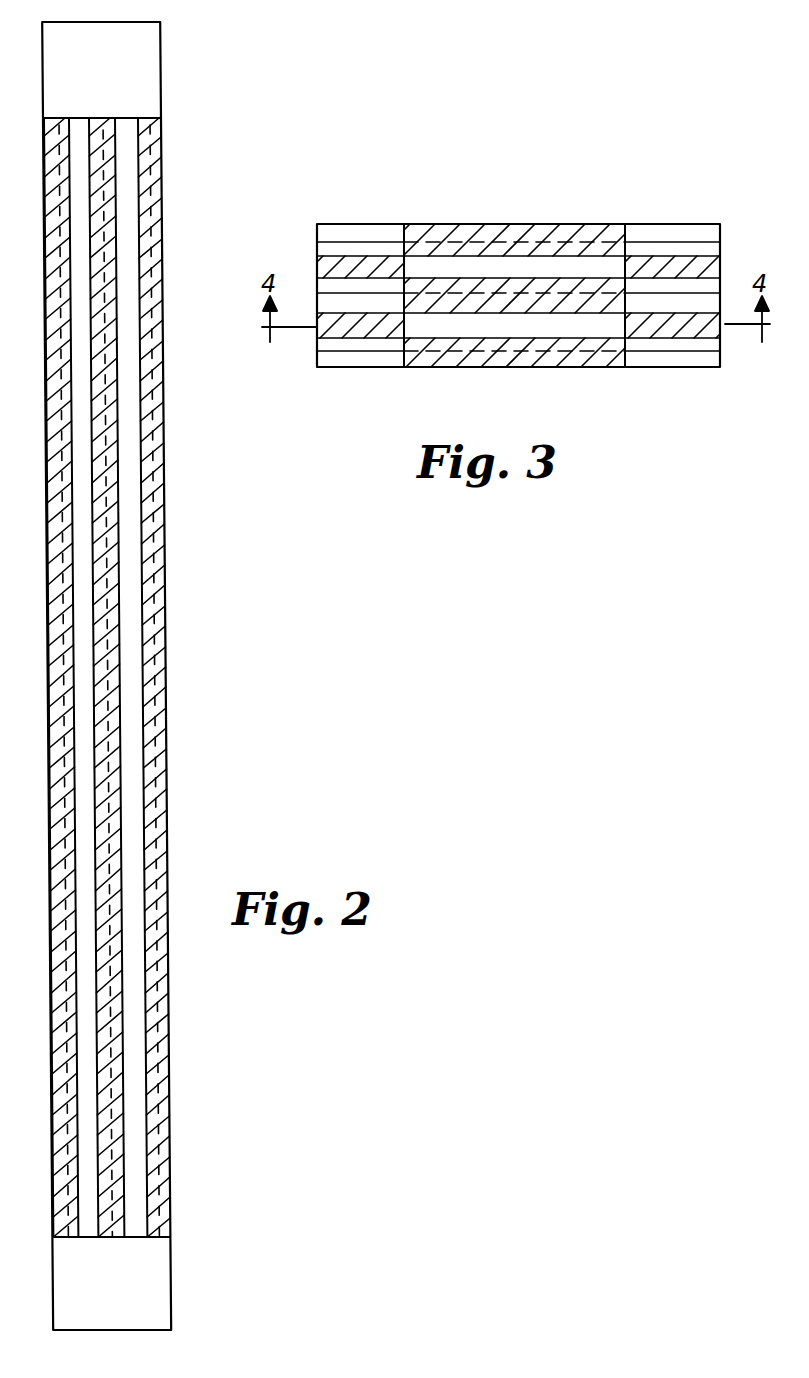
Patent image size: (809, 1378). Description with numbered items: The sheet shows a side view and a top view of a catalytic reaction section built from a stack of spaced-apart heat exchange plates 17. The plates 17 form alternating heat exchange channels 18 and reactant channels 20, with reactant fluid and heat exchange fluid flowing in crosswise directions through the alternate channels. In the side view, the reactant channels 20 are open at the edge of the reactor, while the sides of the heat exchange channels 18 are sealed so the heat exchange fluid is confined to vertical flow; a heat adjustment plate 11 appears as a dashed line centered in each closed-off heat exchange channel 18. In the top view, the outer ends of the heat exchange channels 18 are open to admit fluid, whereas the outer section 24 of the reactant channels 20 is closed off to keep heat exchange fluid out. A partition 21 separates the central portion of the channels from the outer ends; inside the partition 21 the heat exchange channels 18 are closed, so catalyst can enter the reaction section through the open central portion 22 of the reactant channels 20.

In FIG. 2, the heat adjustment plate 11 is at (103, 770).
In FIG. 3, the heat adjustment plate 11 is at (336, 232).
In FIG. 2, the heat exchange plate 17 is at (147, 642).
In FIG. 3, the heat exchange plate 17 is at (633, 252).
In FIG. 2, the heat exchange channel 18 is at (52, 309).
In FIG. 3, the heat exchange channel 18 is at (472, 222).
In FIG. 2, the reactant channel 20 is at (80, 540).
In FIG. 3, the reactant channel 20 is at (442, 325).
In FIG. 3, the partition 21 is at (404, 238).
In FIG. 3, the central portion of the reactant channels 22 is at (541, 268).
In FIG. 3, the outer section of reactant channels 24 is at (361, 266).